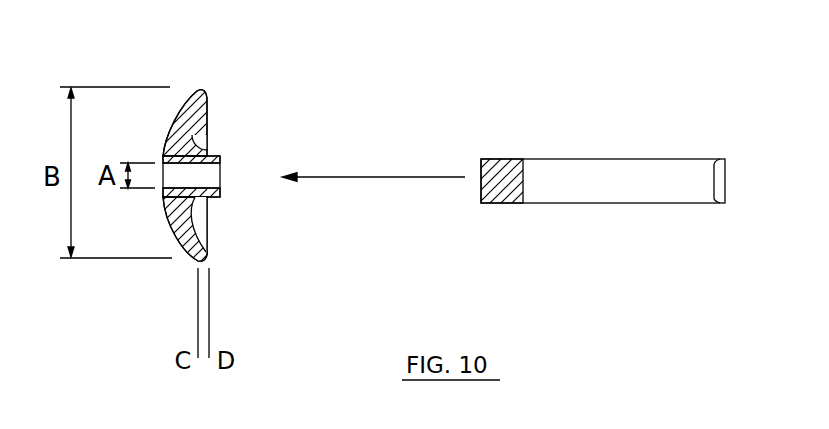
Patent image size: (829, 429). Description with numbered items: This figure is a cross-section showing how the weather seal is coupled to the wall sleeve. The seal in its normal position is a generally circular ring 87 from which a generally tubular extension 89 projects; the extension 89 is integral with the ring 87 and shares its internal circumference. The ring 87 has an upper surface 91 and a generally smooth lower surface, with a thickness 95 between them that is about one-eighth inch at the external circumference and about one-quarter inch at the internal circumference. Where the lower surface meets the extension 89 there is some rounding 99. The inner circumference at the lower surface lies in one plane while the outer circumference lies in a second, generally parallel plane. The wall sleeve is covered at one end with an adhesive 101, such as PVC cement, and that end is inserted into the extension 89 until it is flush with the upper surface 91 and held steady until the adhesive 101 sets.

The ring 87 is at (196, 172).
The rounding 99 is at (193, 137).
The tubular extension 89 is at (221, 157).
The upper surface 91 is at (162, 202).
The thickness 95 is at (152, 261).
The adhesive 101 is at (502, 158).